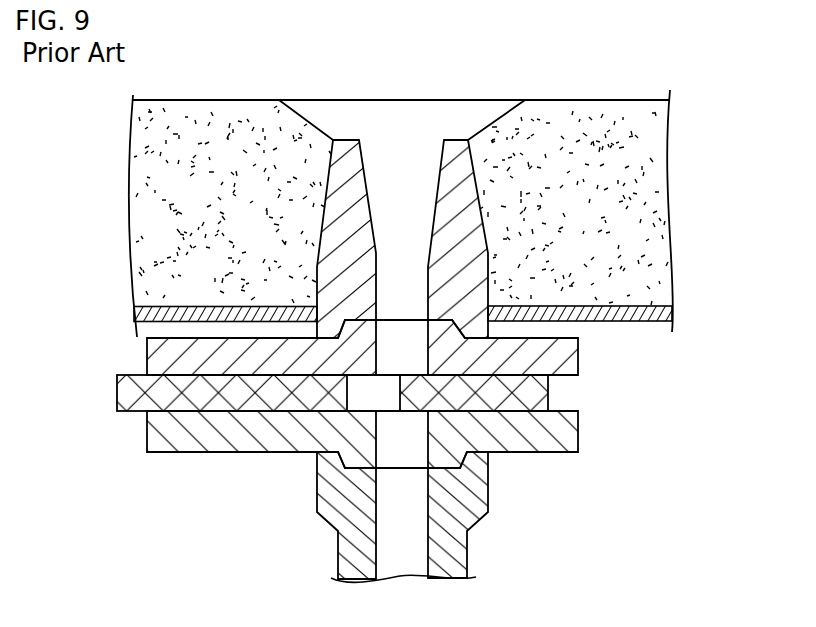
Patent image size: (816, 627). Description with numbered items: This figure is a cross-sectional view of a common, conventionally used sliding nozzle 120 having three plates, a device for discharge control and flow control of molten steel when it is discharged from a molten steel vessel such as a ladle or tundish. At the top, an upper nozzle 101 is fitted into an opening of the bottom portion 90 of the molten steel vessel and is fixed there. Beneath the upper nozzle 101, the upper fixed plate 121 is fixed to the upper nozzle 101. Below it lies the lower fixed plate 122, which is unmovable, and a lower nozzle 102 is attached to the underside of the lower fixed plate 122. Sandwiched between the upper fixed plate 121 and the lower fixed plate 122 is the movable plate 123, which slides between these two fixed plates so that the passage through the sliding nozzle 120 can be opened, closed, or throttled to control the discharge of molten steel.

The bottom portion of the molten steel vessel 90 is at (657, 210).
The upper nozzle 101 is at (453, 173).
The lower nozzle 102 is at (488, 493).
The sliding nozzle 120 is at (393, 451).
The upper fixed plate 121 is at (580, 358).
The lower fixed plate 122 is at (578, 435).
The movable plate 123 is at (548, 395).